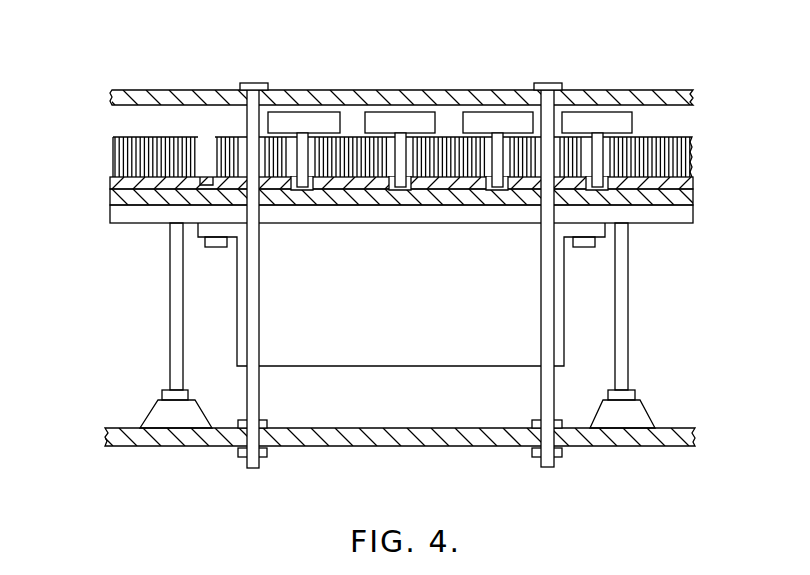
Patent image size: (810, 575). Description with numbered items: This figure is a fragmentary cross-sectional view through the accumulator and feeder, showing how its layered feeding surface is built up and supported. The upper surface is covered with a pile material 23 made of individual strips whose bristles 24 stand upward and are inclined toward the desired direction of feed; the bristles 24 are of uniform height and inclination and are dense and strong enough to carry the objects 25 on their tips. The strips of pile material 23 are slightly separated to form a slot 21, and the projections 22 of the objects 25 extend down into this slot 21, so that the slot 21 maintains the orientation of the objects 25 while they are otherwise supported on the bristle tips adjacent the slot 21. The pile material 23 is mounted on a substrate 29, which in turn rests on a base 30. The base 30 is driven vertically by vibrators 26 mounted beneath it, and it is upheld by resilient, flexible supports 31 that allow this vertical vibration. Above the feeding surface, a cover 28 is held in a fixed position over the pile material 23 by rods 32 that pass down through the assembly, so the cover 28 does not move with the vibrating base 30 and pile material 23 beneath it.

The slot 21 is at (207, 180).
The projections 22 is at (598, 163).
The pile material 23 is at (112, 180).
The bristles 24 is at (113, 155).
The objects 25 is at (607, 112).
The vibrators 26 is at (390, 367).
The cover 28 is at (155, 90).
The substrate 29 is at (110, 197).
The base 30 is at (110, 214).
The resilient, flexible supports 31 is at (170, 313).
The rods 32 is at (259, 393).